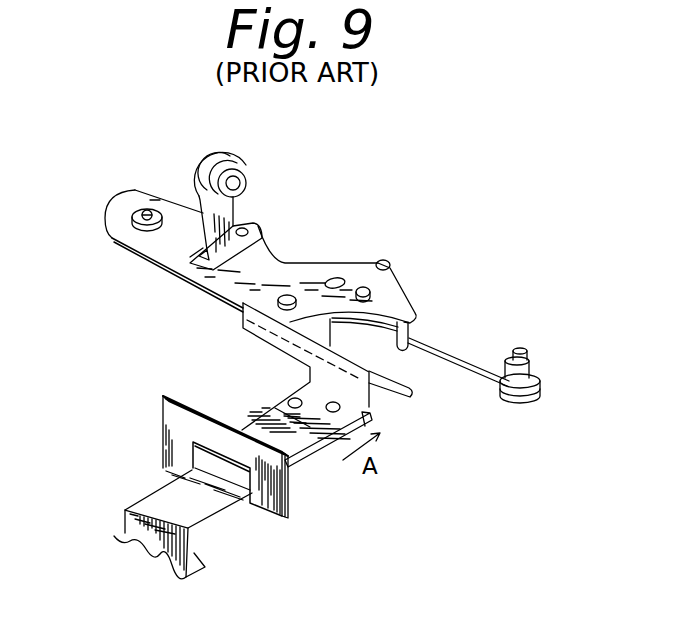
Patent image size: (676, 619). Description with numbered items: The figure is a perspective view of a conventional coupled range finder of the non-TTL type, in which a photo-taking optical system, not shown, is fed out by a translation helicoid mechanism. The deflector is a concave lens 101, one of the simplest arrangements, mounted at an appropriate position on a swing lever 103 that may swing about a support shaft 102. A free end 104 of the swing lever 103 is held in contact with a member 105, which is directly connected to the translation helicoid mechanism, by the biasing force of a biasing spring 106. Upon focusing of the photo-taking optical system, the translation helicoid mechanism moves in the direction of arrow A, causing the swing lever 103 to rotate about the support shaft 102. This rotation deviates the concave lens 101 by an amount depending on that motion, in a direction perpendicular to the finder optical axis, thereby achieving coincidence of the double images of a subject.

The concave lens 101 is at (235, 182).
The support shaft 102 is at (104, 228).
The swing lever 103 is at (284, 262).
The free end 104 is at (410, 390).
The member 105 is at (208, 499).
The biasing spring 106 is at (457, 358).